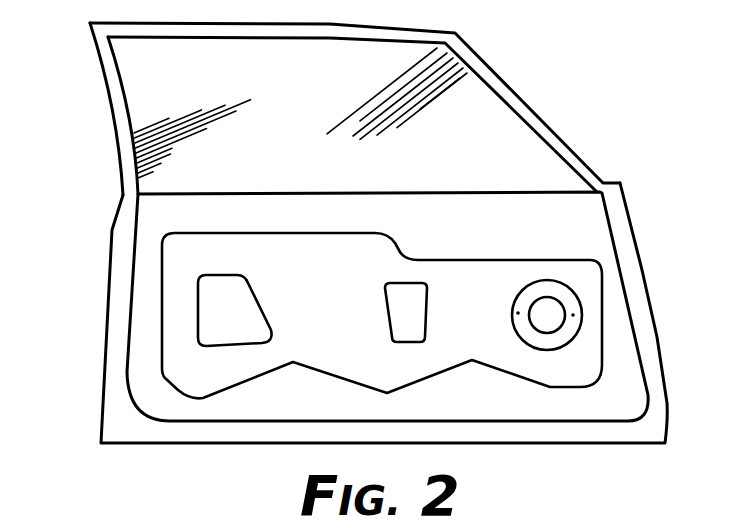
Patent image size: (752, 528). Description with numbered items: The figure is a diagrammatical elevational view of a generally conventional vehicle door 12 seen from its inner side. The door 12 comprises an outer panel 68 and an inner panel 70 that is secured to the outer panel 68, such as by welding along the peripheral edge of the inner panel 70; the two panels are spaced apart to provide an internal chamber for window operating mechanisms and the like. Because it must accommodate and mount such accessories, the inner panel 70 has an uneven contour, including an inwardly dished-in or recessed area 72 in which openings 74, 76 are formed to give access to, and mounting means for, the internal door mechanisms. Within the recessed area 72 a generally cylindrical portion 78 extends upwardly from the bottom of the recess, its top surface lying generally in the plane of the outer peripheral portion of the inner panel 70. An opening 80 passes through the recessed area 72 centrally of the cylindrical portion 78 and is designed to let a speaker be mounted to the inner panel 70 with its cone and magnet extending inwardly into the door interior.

The vehicle door 12 is at (562, 112).
The outer panel 68 is at (112, 287).
The inner panel 70 is at (140, 342).
The recessed area 72 is at (312, 340).
The opening 74 is at (247, 298).
The opening 76 is at (393, 303).
The generally cylindrical portion 78 is at (517, 323).
The opening 80 is at (538, 303).